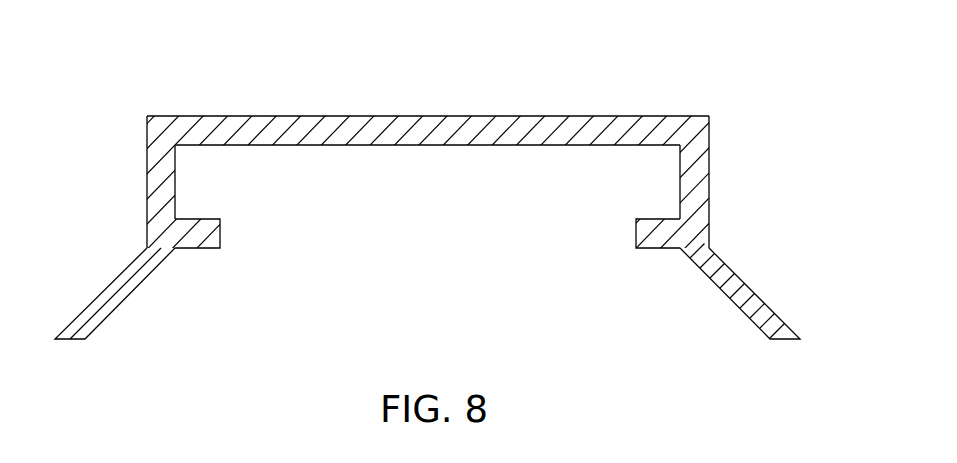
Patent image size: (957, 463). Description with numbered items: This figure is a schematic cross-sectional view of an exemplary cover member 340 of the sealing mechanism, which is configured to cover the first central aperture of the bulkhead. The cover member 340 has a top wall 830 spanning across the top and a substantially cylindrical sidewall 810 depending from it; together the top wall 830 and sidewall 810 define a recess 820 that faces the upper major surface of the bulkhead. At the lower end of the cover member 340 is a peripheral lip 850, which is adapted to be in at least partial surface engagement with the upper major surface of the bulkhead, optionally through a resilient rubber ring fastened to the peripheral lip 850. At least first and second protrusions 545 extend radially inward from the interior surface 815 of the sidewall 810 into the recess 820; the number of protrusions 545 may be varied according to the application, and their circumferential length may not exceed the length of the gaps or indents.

The cover member 340 is at (724, 108).
The top wall 830 is at (470, 116).
The recess 820 is at (362, 168).
The sidewall 810 is at (161, 182).
The interior surface 815 is at (678, 174).
The protrusions 545 is at (198, 238).
The peripheral lip 850 is at (733, 300).